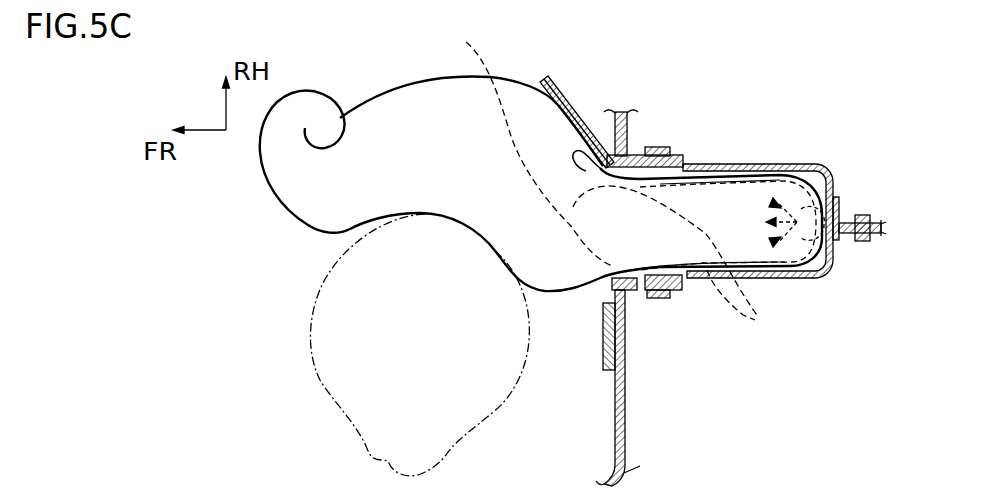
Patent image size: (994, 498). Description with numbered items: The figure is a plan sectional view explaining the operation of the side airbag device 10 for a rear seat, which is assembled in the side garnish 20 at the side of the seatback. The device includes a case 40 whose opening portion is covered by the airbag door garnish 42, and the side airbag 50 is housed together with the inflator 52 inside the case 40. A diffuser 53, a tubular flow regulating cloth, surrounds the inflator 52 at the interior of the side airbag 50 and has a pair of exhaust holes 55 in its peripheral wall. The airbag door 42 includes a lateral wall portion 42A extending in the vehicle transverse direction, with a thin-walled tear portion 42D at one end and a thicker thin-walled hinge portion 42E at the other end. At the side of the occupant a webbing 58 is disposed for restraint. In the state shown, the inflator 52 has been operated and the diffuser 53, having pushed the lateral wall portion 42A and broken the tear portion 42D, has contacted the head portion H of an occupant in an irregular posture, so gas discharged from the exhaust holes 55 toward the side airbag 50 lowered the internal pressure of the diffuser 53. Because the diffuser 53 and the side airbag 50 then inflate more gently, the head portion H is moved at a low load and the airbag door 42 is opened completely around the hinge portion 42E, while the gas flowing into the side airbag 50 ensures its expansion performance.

The side airbag device for a rear seat 10 is at (712, 172).
The side garnish 20 is at (626, 377).
The case 40 is at (834, 187).
The airbag door garnish 42 is at (630, 117).
The lateral wall portion 42A is at (619, 112).
The tear portion 42D is at (542, 80).
The hinge portion 42E is at (590, 136).
The side airbag 50 is at (400, 81).
The inflator 52 is at (828, 279).
The diffuser 53 is at (593, 169).
The exhaust holes 55 is at (757, 316).
The webbing 58 is at (603, 341).
The head portion H is at (323, 377).